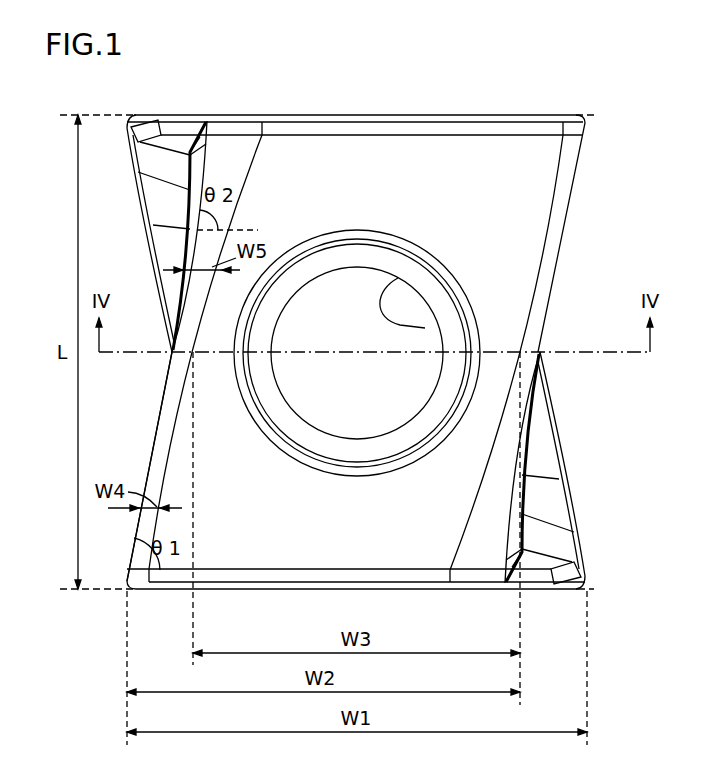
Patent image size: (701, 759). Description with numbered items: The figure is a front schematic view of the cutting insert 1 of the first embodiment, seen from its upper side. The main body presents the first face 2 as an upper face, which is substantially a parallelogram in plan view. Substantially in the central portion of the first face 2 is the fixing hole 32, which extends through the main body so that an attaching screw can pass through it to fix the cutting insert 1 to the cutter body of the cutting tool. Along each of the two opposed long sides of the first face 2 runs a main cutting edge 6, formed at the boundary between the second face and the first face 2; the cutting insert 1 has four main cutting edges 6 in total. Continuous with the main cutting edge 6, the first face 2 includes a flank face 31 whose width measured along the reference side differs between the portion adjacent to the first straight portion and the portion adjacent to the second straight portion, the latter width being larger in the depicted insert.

The cutting insert 1 is at (558, 86).
The first face 2 is at (303, 160).
The main cutting edge 6 is at (160, 412).
The flank face 31 is at (232, 160).
The fixing hole 32 is at (425, 328).